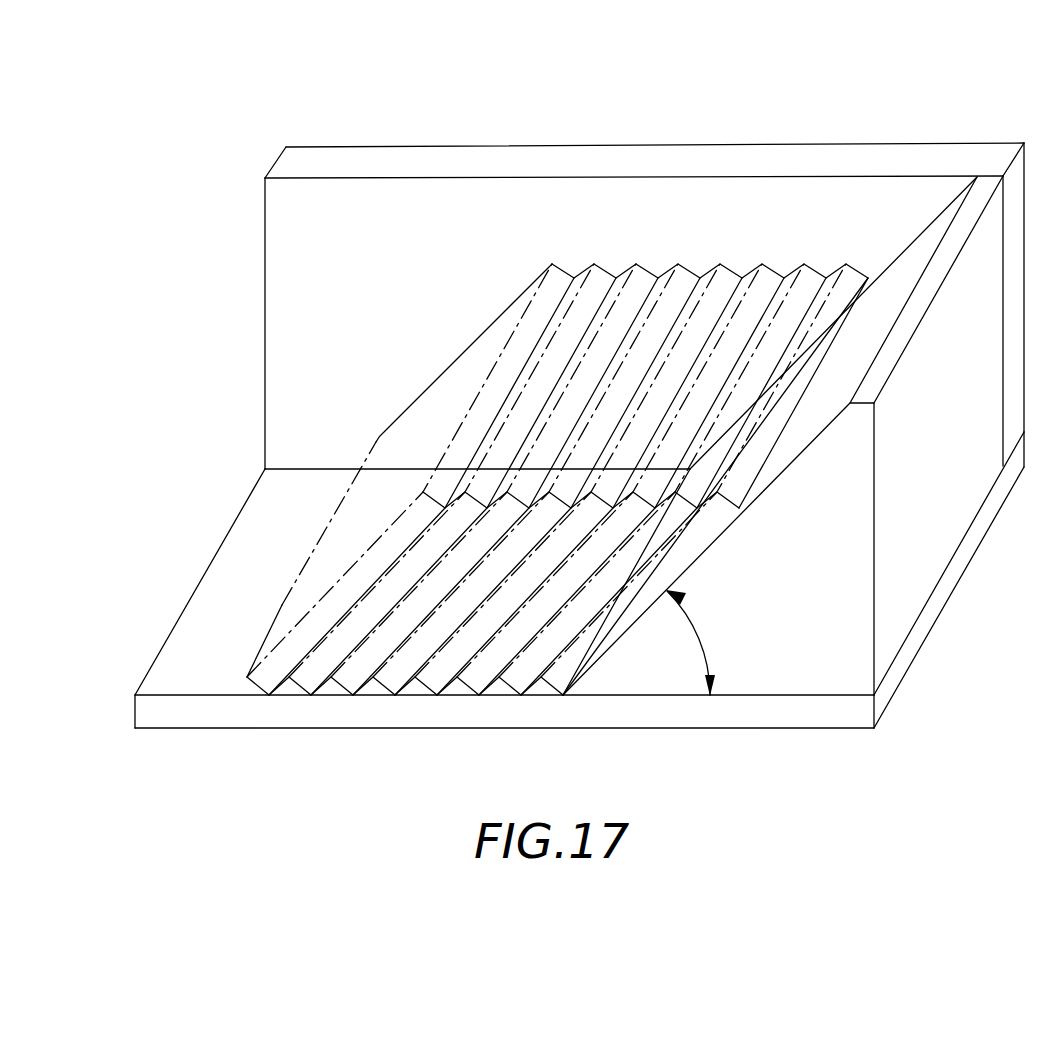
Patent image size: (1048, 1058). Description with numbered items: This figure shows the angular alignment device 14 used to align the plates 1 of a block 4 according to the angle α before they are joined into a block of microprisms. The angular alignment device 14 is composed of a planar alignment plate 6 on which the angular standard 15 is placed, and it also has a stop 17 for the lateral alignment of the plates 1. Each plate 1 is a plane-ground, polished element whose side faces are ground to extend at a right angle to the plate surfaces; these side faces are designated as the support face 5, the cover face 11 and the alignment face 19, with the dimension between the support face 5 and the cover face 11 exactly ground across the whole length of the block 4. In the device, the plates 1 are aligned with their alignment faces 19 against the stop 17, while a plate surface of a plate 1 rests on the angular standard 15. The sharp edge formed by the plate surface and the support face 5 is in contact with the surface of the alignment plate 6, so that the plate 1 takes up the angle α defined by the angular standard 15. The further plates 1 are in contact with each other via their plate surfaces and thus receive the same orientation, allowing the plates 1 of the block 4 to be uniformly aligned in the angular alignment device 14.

The angular alignment device 14 is at (222, 114).
The stop 17 is at (265, 246).
The alignment plate 6 is at (549, 712).
The angular standard 15 is at (843, 668).
The alignment face 19 is at (445, 364).
The plate 1 is at (552, 262).
The cover face 11 is at (616, 266).
The block 4 is at (380, 488).
The support face 5 is at (325, 686).